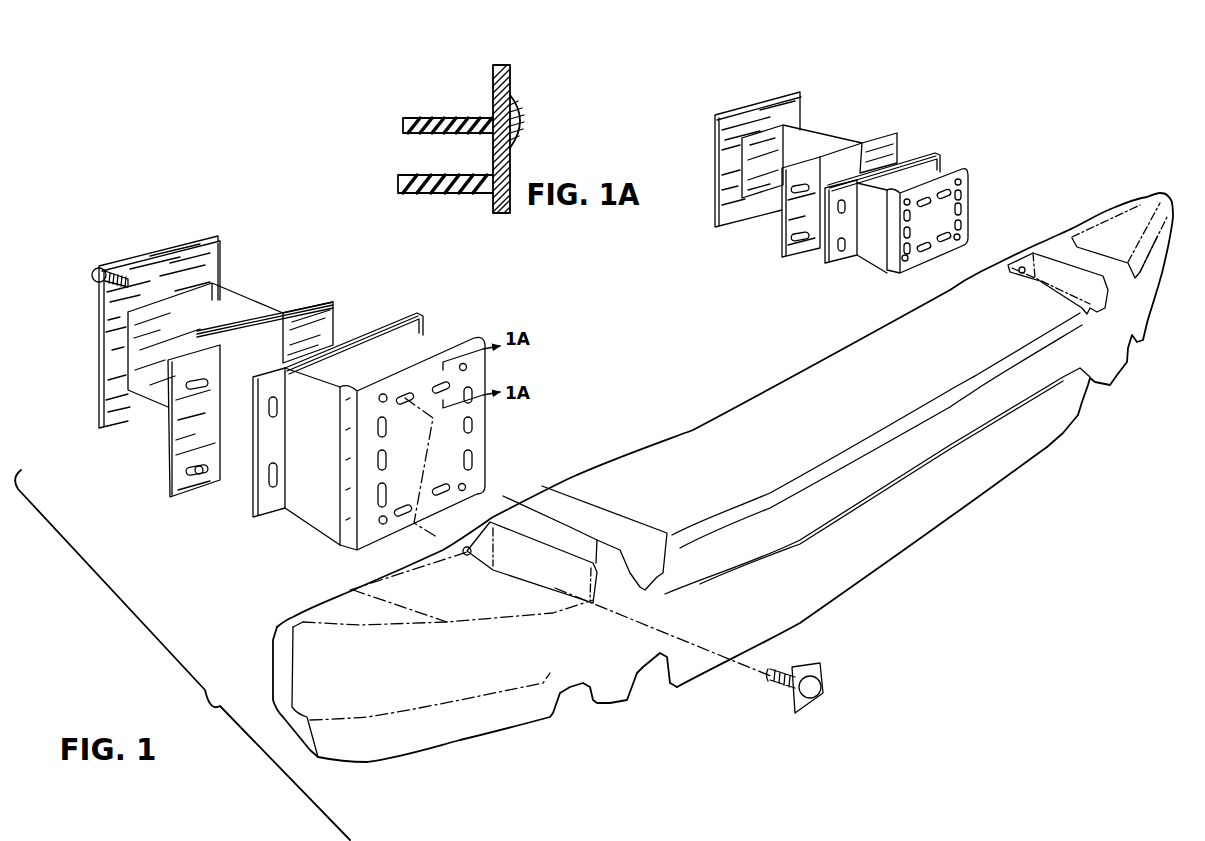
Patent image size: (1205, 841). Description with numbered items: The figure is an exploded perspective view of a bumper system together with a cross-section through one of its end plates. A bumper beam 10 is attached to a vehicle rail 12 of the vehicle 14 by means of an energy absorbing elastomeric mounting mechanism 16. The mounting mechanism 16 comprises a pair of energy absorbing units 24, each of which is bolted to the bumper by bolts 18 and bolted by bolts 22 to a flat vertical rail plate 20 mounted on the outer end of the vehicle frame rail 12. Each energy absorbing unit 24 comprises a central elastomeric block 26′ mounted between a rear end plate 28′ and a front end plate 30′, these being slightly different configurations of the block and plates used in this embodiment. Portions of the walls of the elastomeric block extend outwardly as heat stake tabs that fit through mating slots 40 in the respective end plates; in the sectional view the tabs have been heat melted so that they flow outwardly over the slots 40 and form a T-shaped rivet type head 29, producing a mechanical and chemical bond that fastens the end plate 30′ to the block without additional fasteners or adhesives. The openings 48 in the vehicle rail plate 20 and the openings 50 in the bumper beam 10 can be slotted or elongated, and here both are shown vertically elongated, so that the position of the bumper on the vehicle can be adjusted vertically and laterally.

In FIG. 1, the bumper beam 10 is at (903, 305).
In FIG. 1, the vehicle rail 12 is at (222, 313).
In FIG. 1, the vehicle 14 is at (203, 237).
In FIG. 1, the energy absorbing elastomeric mounting mechanism 16 is at (407, 312).
In FIG. 1, the bolt 18 is at (824, 688).
In FIG. 1, the flat vertical rail plate 20 is at (195, 442).
In FIG. 1, the bolt 22 is at (97, 268).
In FIG. 1, the energy absorbing unit 24 is at (371, 363).
In FIG. 1, the central elastomeric block 26′ is at (412, 352).
In FIG. 1, the rear end plate 28′ is at (253, 510).
In FIG. 1A, the T-shaped rivet type head 29 is at (522, 122).
In FIG. 1, the front end plate 30′ is at (447, 443).
In FIG. 1A, the front end plate 30′ is at (512, 80).
In FIG. 1A, the slot 40 is at (497, 130).
In FIG. 1, the opening in vehicle rail plate 48 is at (192, 478).
In FIG. 1, the opening in bumper 50 is at (470, 548).